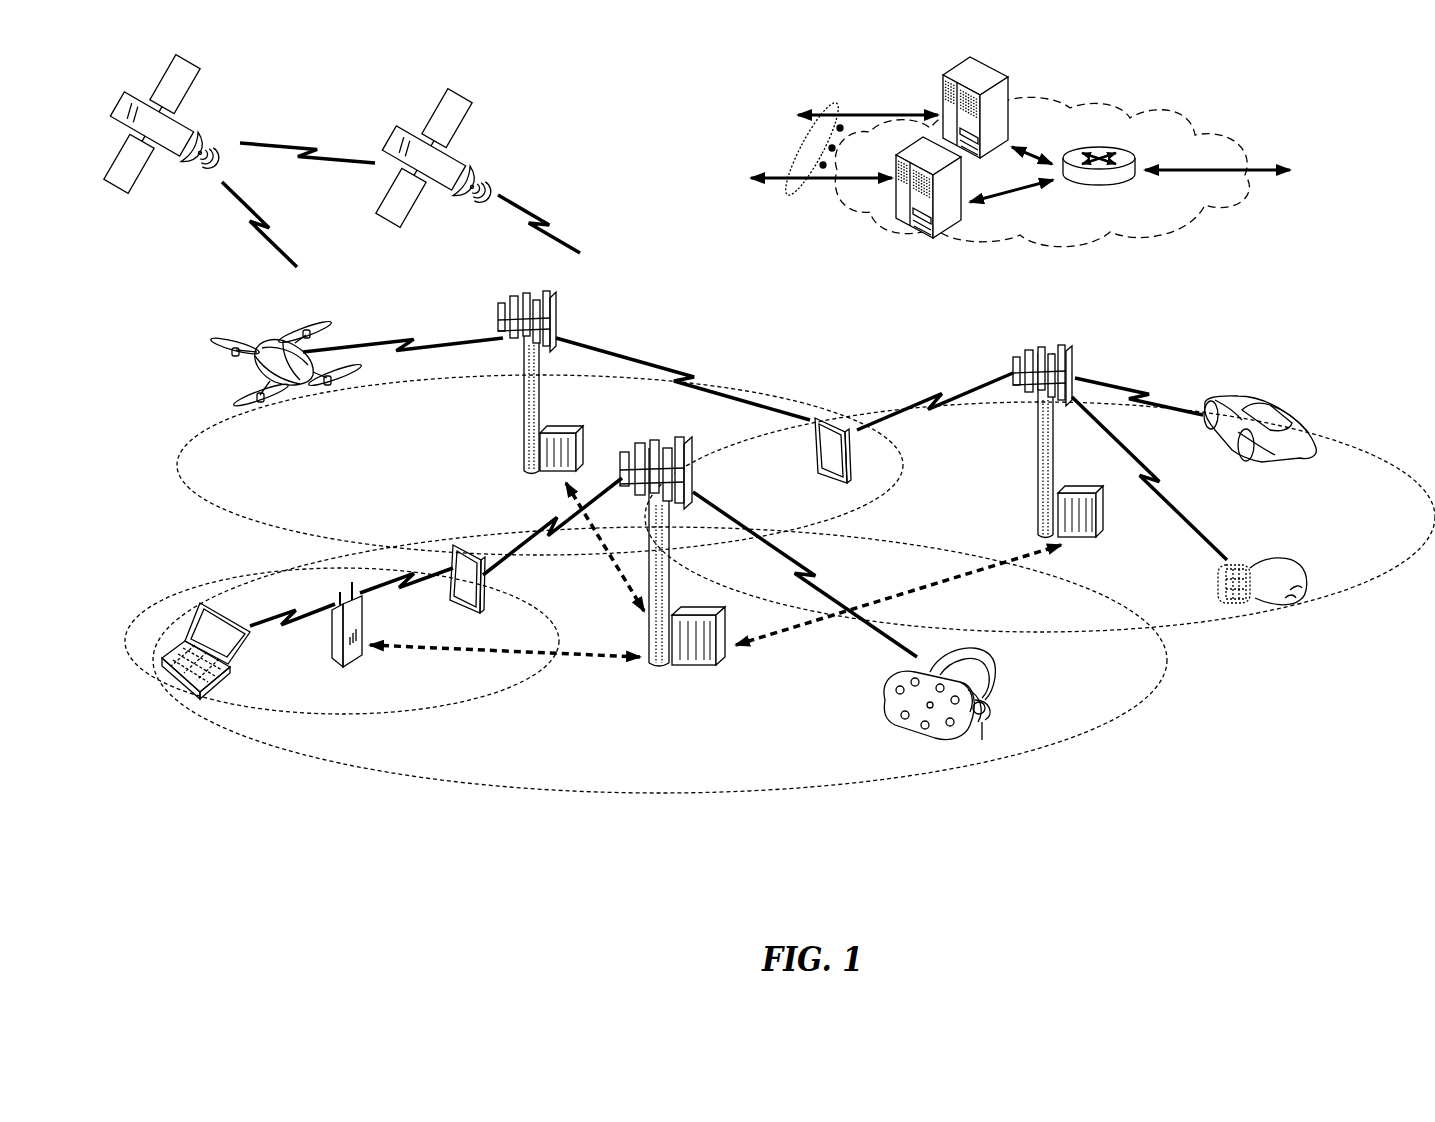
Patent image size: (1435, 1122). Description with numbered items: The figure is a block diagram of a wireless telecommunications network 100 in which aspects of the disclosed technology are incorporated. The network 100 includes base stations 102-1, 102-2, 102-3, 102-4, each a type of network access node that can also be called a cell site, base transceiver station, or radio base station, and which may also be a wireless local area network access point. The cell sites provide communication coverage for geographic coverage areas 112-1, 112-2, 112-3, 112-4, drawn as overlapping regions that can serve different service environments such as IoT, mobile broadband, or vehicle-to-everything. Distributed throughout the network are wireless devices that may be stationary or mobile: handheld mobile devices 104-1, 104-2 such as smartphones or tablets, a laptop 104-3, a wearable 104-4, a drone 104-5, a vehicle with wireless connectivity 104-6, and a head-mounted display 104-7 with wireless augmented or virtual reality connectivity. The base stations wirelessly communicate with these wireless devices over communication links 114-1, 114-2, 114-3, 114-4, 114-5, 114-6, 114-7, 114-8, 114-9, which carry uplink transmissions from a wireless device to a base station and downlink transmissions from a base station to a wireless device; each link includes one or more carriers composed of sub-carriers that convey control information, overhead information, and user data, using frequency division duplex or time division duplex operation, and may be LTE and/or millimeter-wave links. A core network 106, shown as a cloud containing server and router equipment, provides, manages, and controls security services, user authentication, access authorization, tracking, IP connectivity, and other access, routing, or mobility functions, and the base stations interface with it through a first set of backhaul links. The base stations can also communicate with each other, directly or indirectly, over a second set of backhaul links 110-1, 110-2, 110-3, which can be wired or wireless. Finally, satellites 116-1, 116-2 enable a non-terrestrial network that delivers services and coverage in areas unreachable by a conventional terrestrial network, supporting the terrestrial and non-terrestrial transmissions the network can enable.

The wireless telecommunications network 100 is at (1365, 126).
The base station 102-1 is at (658, 668).
The base station 102-2 is at (522, 422).
The base station 102-3 is at (1037, 457).
The base station 102-4 is at (333, 655).
The handheld mobile device 104-1 is at (483, 588).
The handheld mobile device 104-2 is at (815, 457).
The laptop 104-3 is at (182, 685).
The wearable 104-4 is at (1247, 560).
The drone 104-5 is at (293, 387).
The vehicle with wireless connectivity 104-6 is at (1283, 403).
The head-mounted display 104-7 is at (992, 680).
The core network 106 is at (1128, 234).
The backhaul link 110-1 is at (400, 652).
The backhaul link 110-2 is at (962, 580).
The backhaul link 110-3 is at (620, 580).
The geographic coverage area 112-1 is at (587, 793).
The geographic coverage area 112-2 is at (467, 703).
The geographic coverage area 112-3 is at (243, 527).
The geographic coverage area 112-4 is at (1333, 455).
The communication link 114-1 is at (817, 578).
The communication link 114-2 is at (552, 519).
The communication link 114-3 is at (263, 627).
The communication link 114-4 is at (407, 595).
The communication link 114-5 is at (408, 340).
The communication link 114-6 is at (688, 373).
The communication link 114-7 is at (940, 397).
The communication link 114-8 is at (1163, 473).
The communication link 114-9 is at (1140, 392).
The satellite 116-1 is at (207, 128).
The satellite 116-2 is at (485, 168).